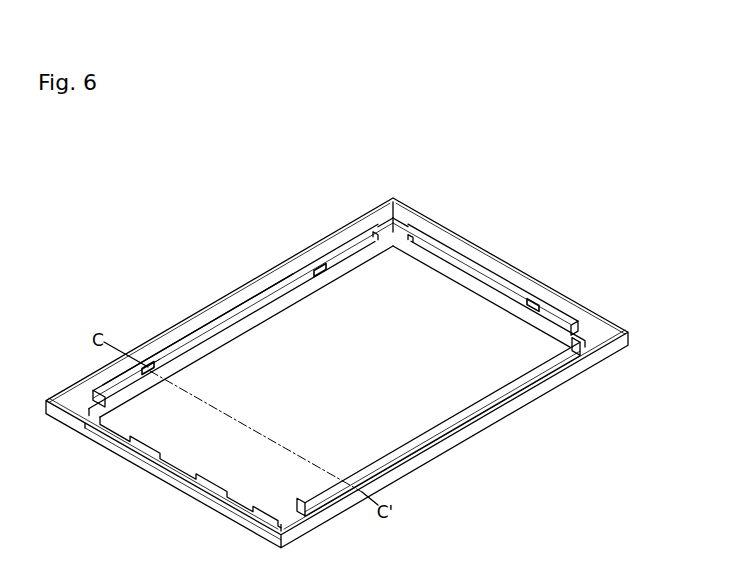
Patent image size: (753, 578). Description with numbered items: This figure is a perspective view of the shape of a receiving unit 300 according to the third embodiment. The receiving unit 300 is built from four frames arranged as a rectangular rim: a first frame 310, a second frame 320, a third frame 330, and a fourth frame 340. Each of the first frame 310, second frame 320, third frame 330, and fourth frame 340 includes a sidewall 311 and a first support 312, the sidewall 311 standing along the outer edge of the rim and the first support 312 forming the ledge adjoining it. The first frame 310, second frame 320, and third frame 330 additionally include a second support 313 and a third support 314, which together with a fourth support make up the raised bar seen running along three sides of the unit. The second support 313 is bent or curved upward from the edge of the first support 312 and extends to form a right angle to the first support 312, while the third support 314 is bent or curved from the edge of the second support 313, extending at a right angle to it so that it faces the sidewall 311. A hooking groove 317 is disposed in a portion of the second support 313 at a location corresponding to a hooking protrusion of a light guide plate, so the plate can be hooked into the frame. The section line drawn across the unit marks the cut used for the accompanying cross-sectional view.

The receiving unit 300 is at (531, 188).
The first frame 310 is at (254, 242).
The sidewall 311 is at (205, 306).
The first support 312 is at (383, 225).
The second support 313 is at (187, 350).
The third support 314 is at (157, 354).
The hooking groove 317 is at (150, 372).
The second frame 320 is at (544, 266).
The third frame 330 is at (494, 453).
The fourth frame 340 is at (141, 496).